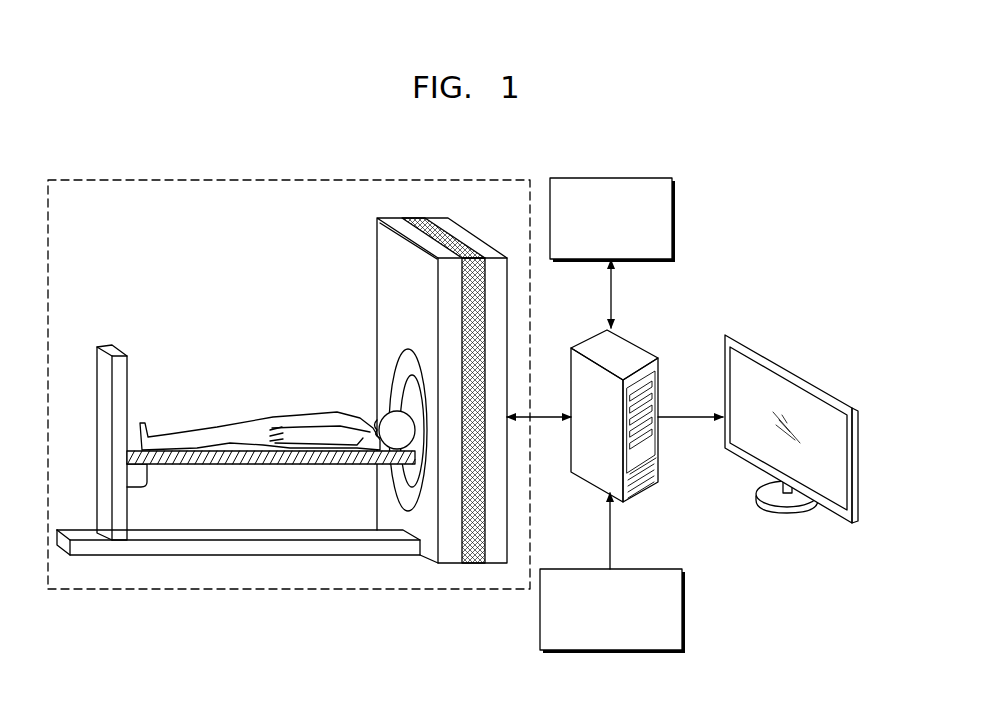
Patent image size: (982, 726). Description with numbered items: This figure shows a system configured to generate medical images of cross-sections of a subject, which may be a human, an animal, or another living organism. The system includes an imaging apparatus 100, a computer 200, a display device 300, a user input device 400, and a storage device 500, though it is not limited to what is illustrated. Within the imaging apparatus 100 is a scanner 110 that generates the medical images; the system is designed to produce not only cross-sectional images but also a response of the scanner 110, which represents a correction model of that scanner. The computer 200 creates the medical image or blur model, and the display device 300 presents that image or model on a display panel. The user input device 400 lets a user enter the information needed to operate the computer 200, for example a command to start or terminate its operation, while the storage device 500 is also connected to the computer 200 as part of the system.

The imaging apparatus 100 is at (293, 179).
The scanner 110 is at (448, 218).
The computer 200 is at (645, 350).
The display device 300 is at (797, 373).
The user input device 400 is at (637, 569).
The storage device 500 is at (638, 178).